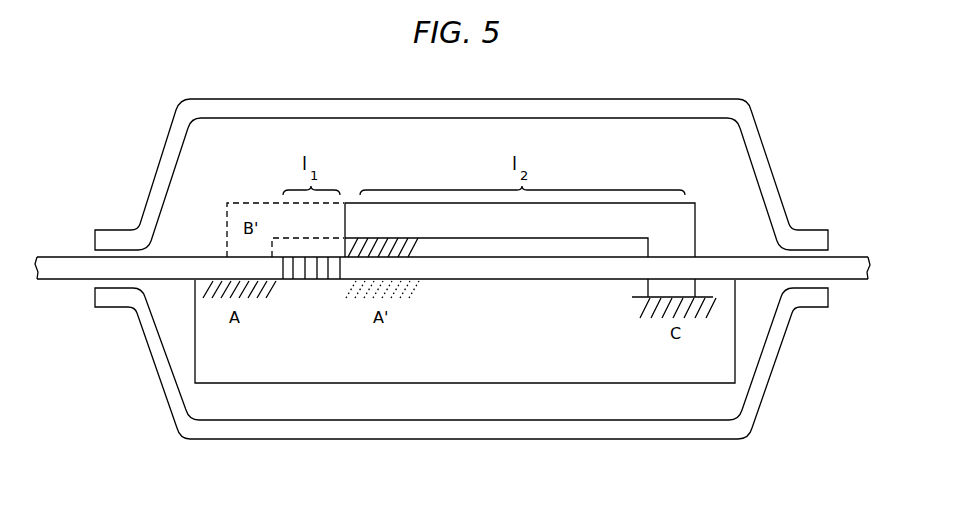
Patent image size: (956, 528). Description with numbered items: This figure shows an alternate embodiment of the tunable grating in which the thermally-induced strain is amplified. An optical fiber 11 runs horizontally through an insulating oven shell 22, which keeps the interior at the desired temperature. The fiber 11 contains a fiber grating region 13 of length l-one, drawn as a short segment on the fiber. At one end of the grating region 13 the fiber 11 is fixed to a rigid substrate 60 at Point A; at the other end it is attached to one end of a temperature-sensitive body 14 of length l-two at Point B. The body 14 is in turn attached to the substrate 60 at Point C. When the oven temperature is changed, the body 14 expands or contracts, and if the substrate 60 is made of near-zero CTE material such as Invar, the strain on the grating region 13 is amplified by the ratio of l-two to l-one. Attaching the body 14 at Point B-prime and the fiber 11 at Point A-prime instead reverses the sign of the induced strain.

The fiber 11 is at (65, 282).
The fiber grating region 13 is at (340, 283).
The temperature-sensitive body 14 is at (673, 233).
The insulating oven shell 22 is at (598, 439).
The rigid substrate 60 is at (408, 367).